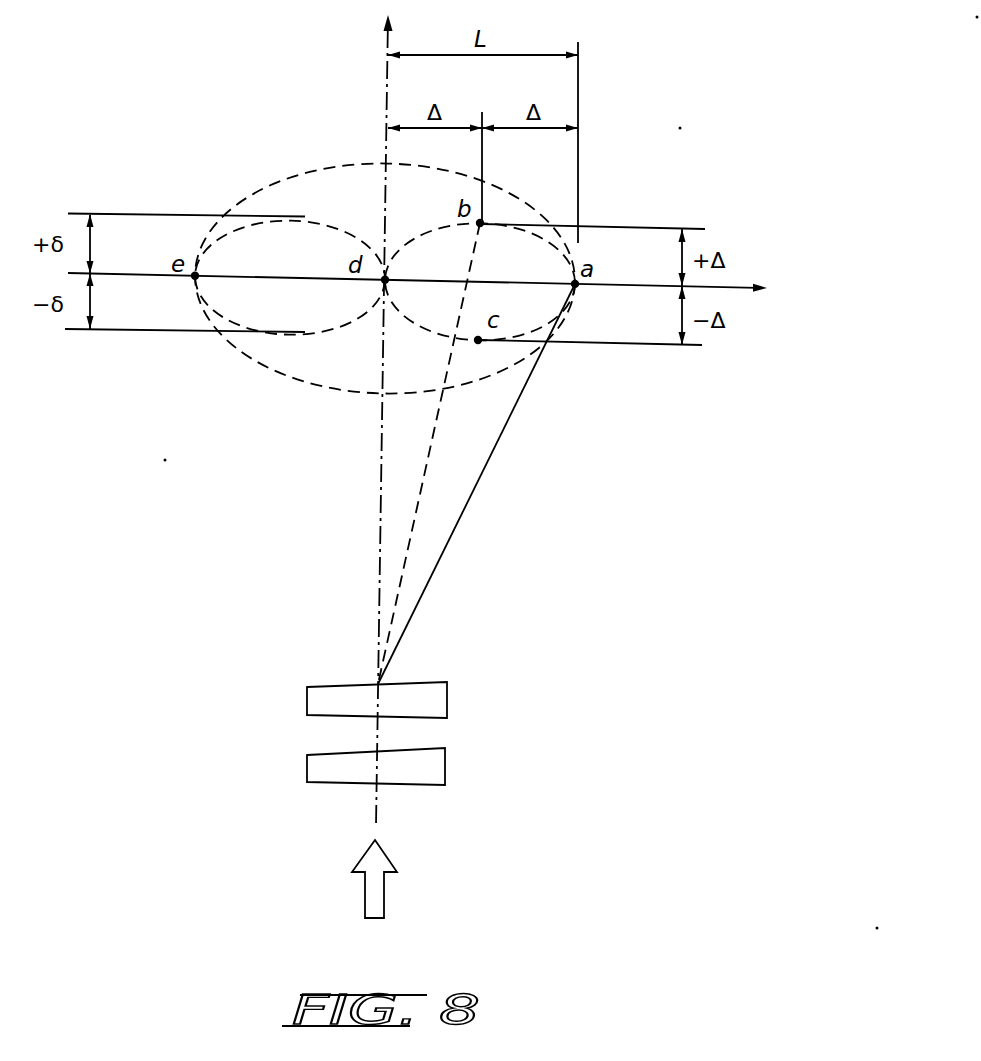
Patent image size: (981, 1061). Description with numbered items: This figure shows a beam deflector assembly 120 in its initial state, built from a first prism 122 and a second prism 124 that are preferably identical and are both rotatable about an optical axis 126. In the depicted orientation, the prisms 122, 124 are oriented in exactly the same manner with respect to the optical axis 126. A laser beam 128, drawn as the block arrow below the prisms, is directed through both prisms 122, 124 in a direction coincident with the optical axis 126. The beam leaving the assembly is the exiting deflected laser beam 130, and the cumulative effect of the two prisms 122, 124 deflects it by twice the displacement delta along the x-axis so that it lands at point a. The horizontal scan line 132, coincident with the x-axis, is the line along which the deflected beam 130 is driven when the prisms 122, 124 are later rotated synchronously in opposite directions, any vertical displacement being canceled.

The beam deflector assembly 120 is at (476, 729).
The first prism 122 is at (447, 690).
The second prism 124 is at (446, 758).
The optical axis 126 is at (379, 537).
The laser beam 128 is at (364, 905).
The exiting deflected laser beam 130 is at (485, 462).
The scan line 132 is at (742, 287).